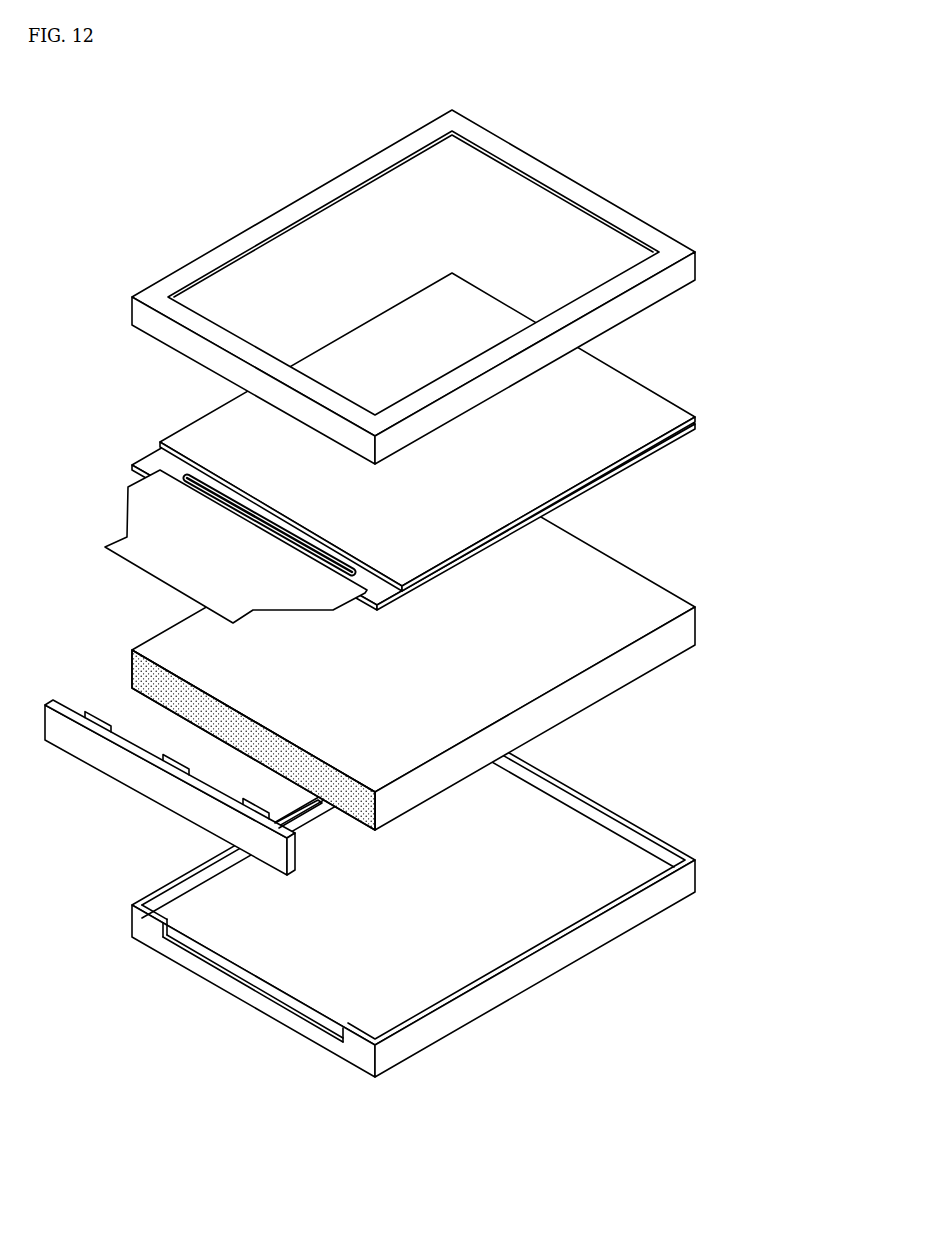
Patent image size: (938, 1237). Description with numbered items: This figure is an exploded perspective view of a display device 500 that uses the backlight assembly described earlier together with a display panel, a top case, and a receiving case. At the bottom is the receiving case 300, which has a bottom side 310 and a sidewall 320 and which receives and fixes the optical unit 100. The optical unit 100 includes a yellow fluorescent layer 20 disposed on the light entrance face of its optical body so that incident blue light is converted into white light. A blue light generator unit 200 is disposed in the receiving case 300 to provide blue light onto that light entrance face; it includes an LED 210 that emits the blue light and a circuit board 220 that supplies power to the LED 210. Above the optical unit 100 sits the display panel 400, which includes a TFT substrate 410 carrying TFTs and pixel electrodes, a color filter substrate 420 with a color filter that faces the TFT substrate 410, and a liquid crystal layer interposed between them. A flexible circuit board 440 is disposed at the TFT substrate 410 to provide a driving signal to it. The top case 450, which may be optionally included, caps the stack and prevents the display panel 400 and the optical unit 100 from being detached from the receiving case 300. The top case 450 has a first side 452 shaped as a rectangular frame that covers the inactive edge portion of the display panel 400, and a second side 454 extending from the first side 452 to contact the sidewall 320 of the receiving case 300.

The display device 500 is at (430, 593).
The top case 450 is at (436, 287).
The first side 452 is at (626, 218).
The second side 454 is at (650, 294).
The display panel 400 is at (412, 448).
The color filter substrate 420 is at (694, 417).
The TFT substrate 410 is at (694, 428).
The flexible circuit board 440 is at (128, 513).
The optical unit 100 is at (417, 675).
The yellow fluorescent layer 20 is at (346, 800).
The blue light generator unit 200 is at (178, 741).
The LED 210 is at (172, 730).
The circuit board 220 is at (63, 702).
The receiving case 300 is at (439, 898).
The bottom side 310 is at (565, 846).
The sidewall 320 is at (666, 900).